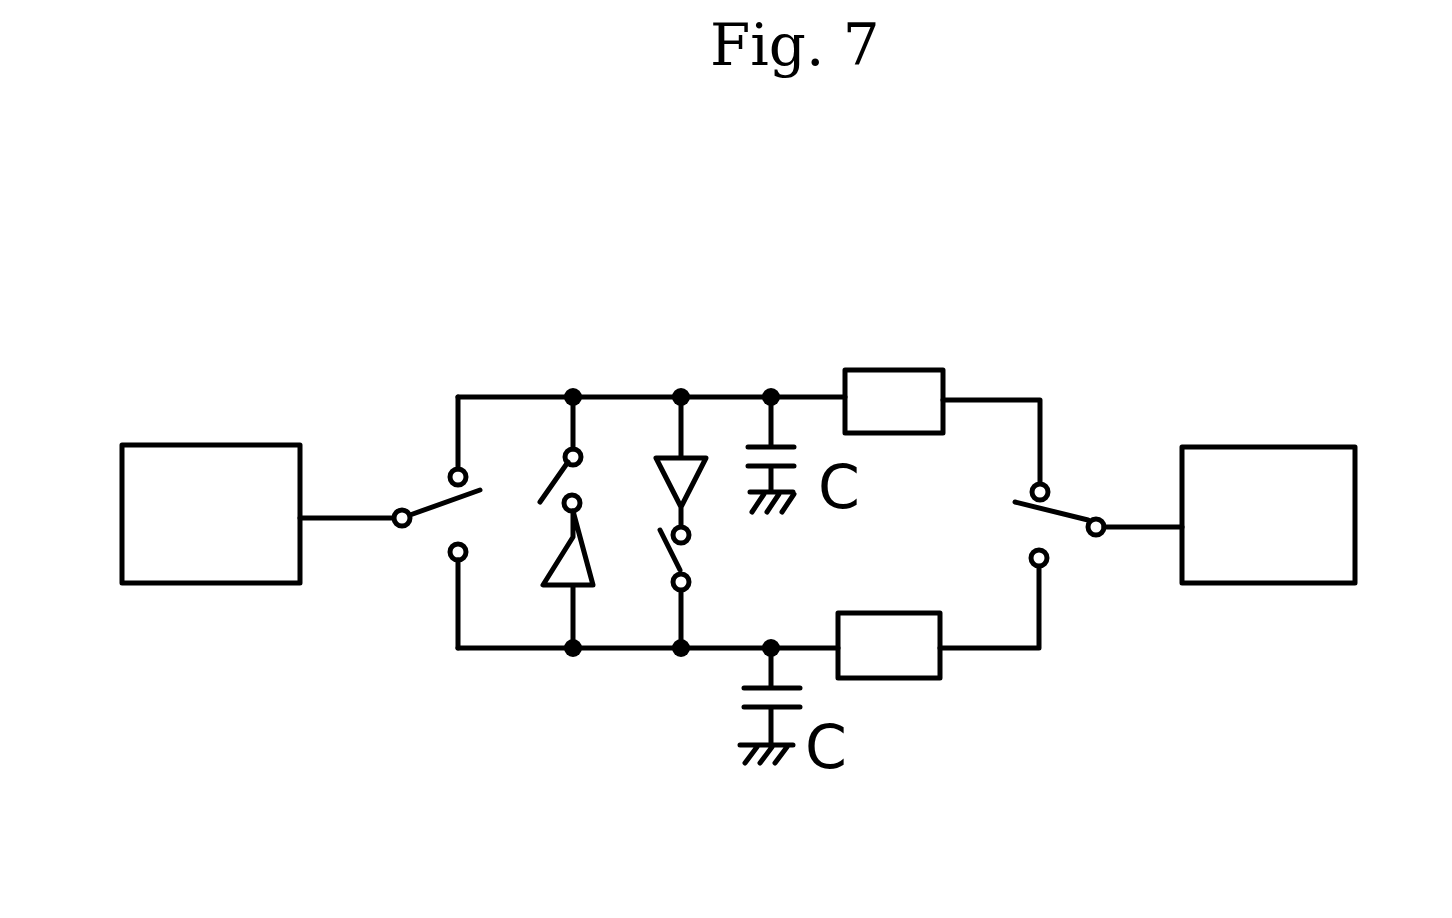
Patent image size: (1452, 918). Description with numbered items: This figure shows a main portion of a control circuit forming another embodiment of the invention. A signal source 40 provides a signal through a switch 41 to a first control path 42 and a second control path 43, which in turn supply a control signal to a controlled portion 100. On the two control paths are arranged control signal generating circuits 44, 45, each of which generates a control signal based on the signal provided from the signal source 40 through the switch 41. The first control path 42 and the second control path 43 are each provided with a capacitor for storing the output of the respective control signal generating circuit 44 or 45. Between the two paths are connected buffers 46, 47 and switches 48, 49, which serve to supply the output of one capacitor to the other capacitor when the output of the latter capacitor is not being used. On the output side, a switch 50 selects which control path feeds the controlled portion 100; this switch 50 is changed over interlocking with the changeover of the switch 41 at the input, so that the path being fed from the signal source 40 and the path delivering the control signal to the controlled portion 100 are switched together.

The controlled portion 100 is at (168, 460).
The switch 50 is at (440, 522).
The switch 49 is at (612, 470).
The buffer 47 is at (582, 560).
The buffer 46 is at (692, 492).
The switch 48 is at (688, 560).
The first control path 42 is at (733, 395).
The second control path 43 is at (713, 643).
The control signal generating circuit 44 is at (908, 370).
The control signal generating circuit 45 is at (900, 665).
The switch 41 is at (1050, 528).
The signal source 40 is at (1322, 483).